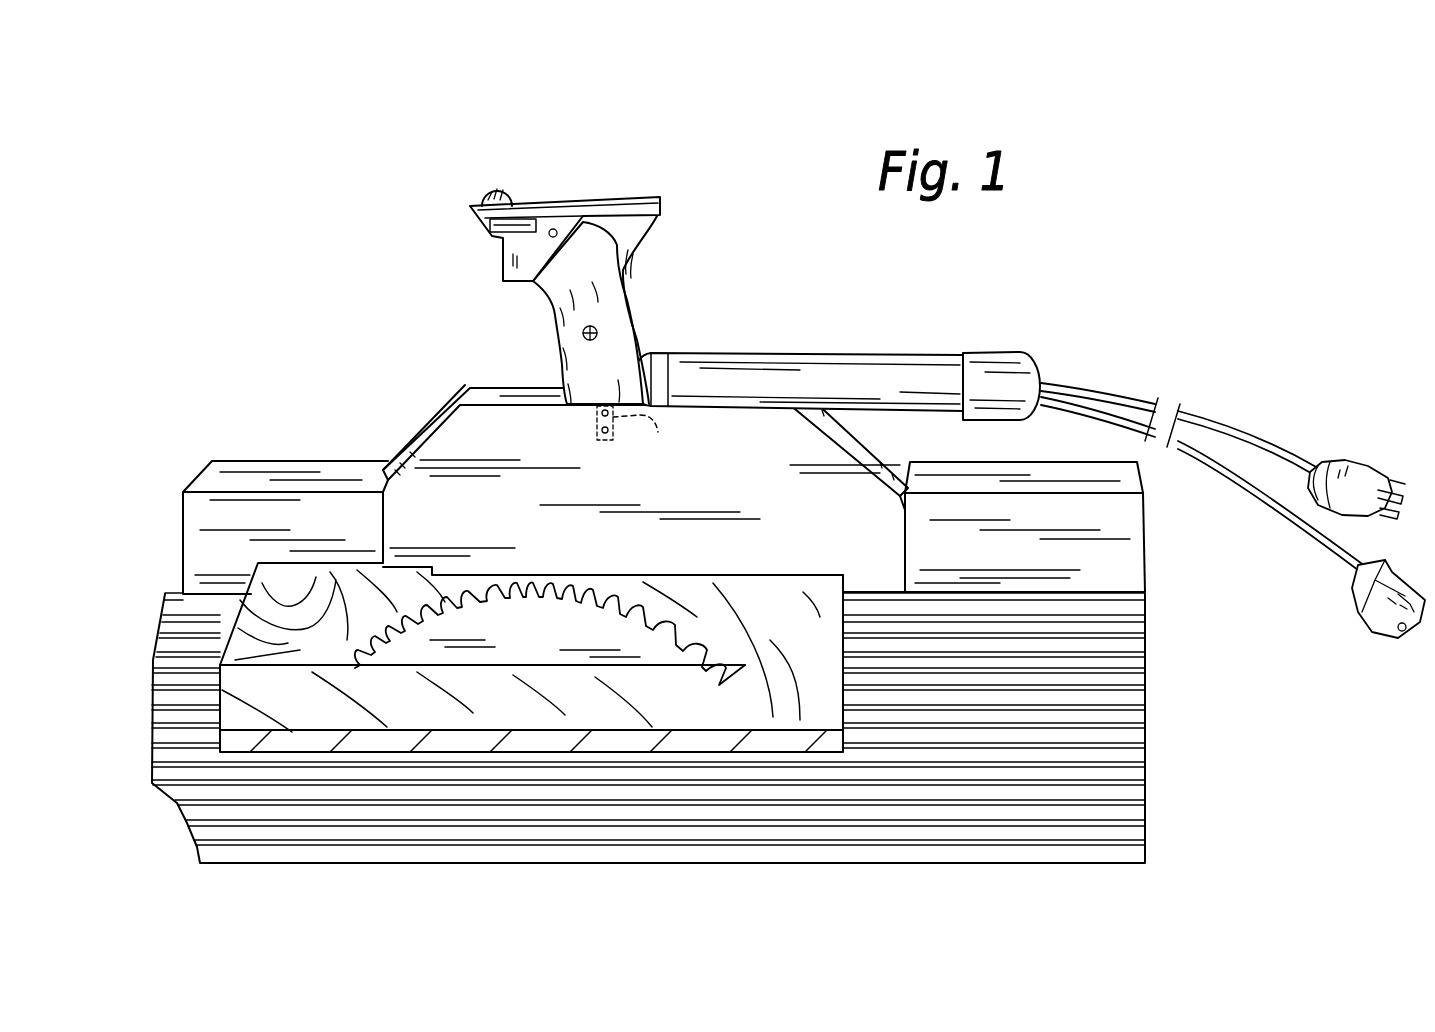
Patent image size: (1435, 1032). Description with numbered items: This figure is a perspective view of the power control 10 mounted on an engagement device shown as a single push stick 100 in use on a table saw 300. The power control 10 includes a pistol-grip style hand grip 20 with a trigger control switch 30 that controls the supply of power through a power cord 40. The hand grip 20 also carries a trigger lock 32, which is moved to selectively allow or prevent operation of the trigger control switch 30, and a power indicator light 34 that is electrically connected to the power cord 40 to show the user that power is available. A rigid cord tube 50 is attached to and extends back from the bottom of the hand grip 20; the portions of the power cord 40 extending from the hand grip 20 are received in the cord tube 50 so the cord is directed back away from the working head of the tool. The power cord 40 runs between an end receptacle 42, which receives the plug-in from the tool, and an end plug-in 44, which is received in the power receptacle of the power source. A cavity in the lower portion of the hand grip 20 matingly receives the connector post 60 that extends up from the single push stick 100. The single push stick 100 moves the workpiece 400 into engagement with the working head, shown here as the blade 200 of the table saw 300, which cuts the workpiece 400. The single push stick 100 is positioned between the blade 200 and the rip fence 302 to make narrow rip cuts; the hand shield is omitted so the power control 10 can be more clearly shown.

The power control 10 is at (931, 388).
The hand grip 20 is at (607, 298).
The trigger control switch 30 is at (503, 276).
The trigger lock 32 is at (520, 225).
The power indicator light 34 is at (498, 190).
The power cord 40 is at (1233, 514).
The end receptacle 42 is at (1372, 610).
The end plug-in 44 is at (1347, 470).
The cord tube 50 is at (877, 376).
The connector post 60 is at (652, 431).
The single push stick 100 is at (658, 503).
The blade 200 is at (555, 642).
The table saw 300 is at (1178, 778).
The rip fence 302 is at (1147, 535).
The workpiece 400 is at (705, 715).